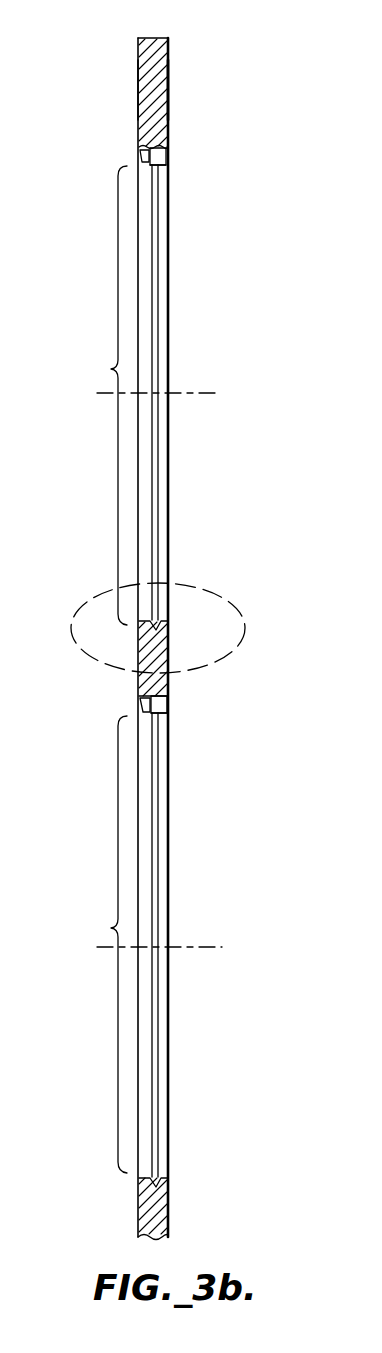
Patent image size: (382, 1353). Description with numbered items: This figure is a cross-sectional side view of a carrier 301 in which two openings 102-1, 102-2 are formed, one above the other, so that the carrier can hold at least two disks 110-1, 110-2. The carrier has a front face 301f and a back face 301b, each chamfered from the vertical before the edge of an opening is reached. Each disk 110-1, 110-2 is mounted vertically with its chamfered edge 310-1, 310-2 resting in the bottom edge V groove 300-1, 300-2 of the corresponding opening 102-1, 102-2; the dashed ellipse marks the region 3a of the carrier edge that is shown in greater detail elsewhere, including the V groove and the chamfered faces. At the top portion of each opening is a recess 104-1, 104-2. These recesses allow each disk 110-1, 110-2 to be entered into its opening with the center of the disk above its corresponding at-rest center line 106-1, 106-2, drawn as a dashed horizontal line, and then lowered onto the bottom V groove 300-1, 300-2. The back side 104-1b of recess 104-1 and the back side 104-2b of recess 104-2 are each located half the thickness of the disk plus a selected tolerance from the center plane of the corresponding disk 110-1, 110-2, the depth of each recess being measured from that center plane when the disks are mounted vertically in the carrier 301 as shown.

The carrier 301 is at (155, 40).
The back face 301b is at (150, 87).
The front face 301f is at (170, 88).
The recess 104-1 is at (160, 156).
The back side of recess 104-1b is at (147, 157).
The chamfered edge 310-1 is at (156, 165).
The disk 110-1 is at (156, 287).
The opening 102-1 is at (83, 395).
The at-rest center line 106-1 is at (196, 392).
The detail region of FIG. 3a is at (100, 593).
The V groove 300-1 is at (162, 622).
The recess 104-2 is at (160, 703).
The back side of recess 104-2b is at (148, 705).
The chamfered edge 310-2 is at (157, 713).
The disk 110-2 is at (156, 813).
The opening 102-2 is at (83, 944).
The at-rest center line 106-2 is at (196, 946).
The V groove 300-2 is at (160, 1178).